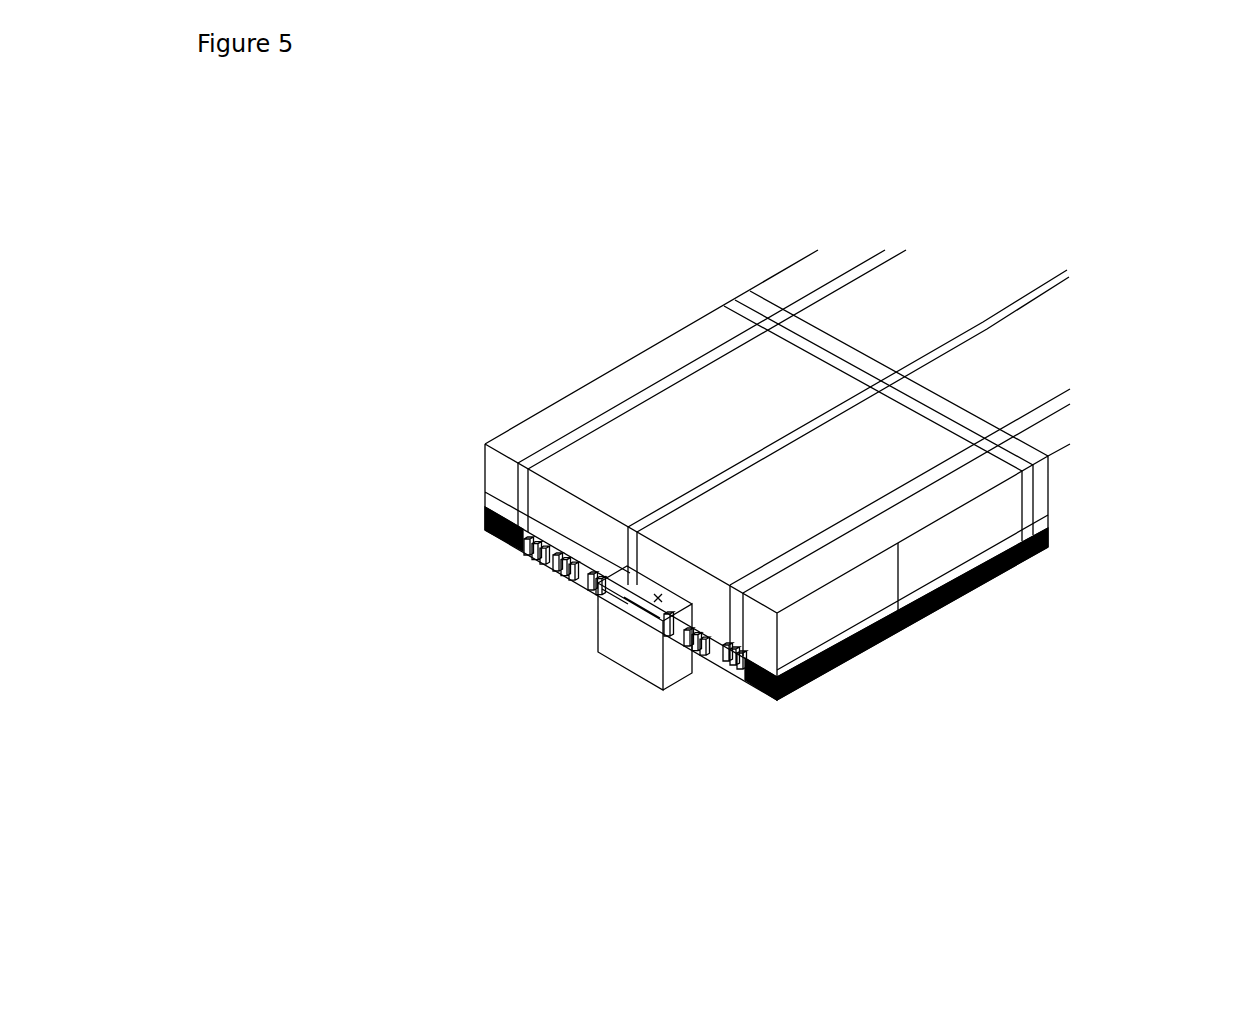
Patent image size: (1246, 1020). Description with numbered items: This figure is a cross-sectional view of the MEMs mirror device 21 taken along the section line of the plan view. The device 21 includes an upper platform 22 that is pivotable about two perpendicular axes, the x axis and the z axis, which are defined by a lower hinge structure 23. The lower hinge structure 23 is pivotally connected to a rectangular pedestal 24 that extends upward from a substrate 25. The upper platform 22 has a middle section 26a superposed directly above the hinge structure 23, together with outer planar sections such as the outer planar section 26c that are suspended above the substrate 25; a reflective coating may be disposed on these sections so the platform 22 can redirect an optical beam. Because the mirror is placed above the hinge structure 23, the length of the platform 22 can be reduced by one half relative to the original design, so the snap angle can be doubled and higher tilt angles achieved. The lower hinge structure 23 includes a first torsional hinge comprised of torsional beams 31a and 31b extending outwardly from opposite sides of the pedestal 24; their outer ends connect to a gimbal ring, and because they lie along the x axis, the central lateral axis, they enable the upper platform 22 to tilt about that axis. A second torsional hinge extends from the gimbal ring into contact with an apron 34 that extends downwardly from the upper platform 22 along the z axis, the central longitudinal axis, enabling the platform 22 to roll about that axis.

The MEMs mirror device 21 is at (637, 248).
The upper platform 22 is at (747, 290).
The lower hinge structure 23 is at (532, 568).
The rectangular pedestal 24 is at (637, 655).
The substrate 25 is at (886, 742).
The middle section 26a is at (555, 422).
The outer planar section 26c is at (1058, 352).
The torsional beam 31a is at (573, 567).
The torsional beam 31b is at (710, 643).
The apron 34 is at (960, 593).